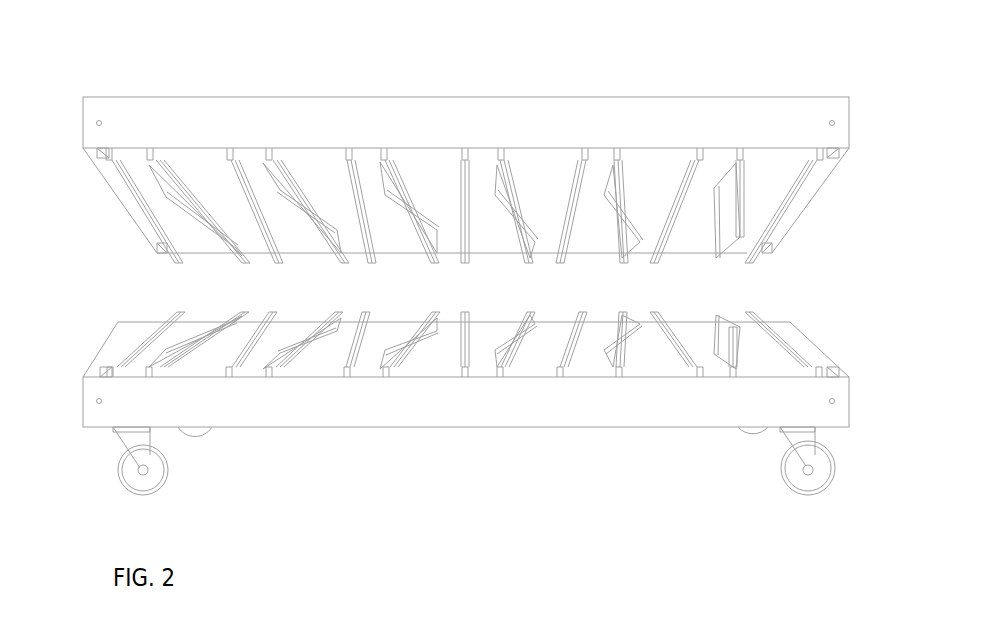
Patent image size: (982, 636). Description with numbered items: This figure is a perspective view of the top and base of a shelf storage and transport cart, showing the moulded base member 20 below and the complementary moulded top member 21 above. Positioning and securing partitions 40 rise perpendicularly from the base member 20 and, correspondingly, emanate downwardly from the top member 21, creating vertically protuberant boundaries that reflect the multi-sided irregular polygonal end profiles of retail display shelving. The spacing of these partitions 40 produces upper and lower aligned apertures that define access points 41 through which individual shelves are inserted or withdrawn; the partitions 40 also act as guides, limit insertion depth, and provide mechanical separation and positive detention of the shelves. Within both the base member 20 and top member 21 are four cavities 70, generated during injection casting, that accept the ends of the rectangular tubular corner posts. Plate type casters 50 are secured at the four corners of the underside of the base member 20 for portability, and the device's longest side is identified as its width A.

The moulded base member 20 is at (477, 415).
The moulded top member 21 is at (355, 115).
The positioning and securing partitions 40 is at (620, 150).
The access points 41 is at (318, 165).
The plate type casters 50 is at (118, 470).
The cavities 70 is at (103, 158).
The width A is at (541, 98).